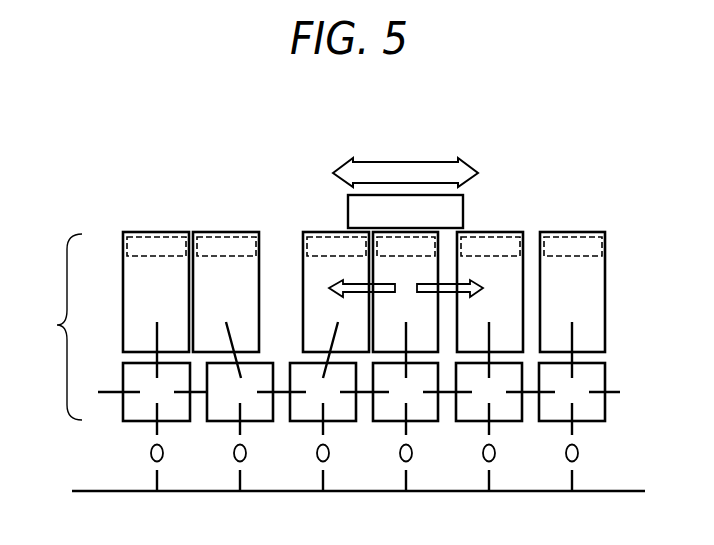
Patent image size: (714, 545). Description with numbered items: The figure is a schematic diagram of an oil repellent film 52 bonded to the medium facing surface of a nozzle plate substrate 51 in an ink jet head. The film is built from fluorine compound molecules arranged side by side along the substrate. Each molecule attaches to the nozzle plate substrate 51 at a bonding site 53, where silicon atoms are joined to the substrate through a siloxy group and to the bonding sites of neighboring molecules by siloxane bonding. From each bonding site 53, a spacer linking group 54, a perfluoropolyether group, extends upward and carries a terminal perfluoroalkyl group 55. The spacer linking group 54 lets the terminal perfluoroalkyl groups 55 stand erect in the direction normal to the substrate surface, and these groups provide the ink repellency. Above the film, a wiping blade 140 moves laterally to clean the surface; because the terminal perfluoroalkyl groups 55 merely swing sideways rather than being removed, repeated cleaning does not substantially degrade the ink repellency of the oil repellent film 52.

The wiping blade 140 is at (400, 207).
The nozzle plate substrate 51 is at (622, 502).
The oil repellent film 52 is at (322, 327).
The bonding site 53 is at (592, 407).
The spacer linking group 54 is at (592, 300).
The terminal perfluoroalkyl group 55 is at (592, 248).